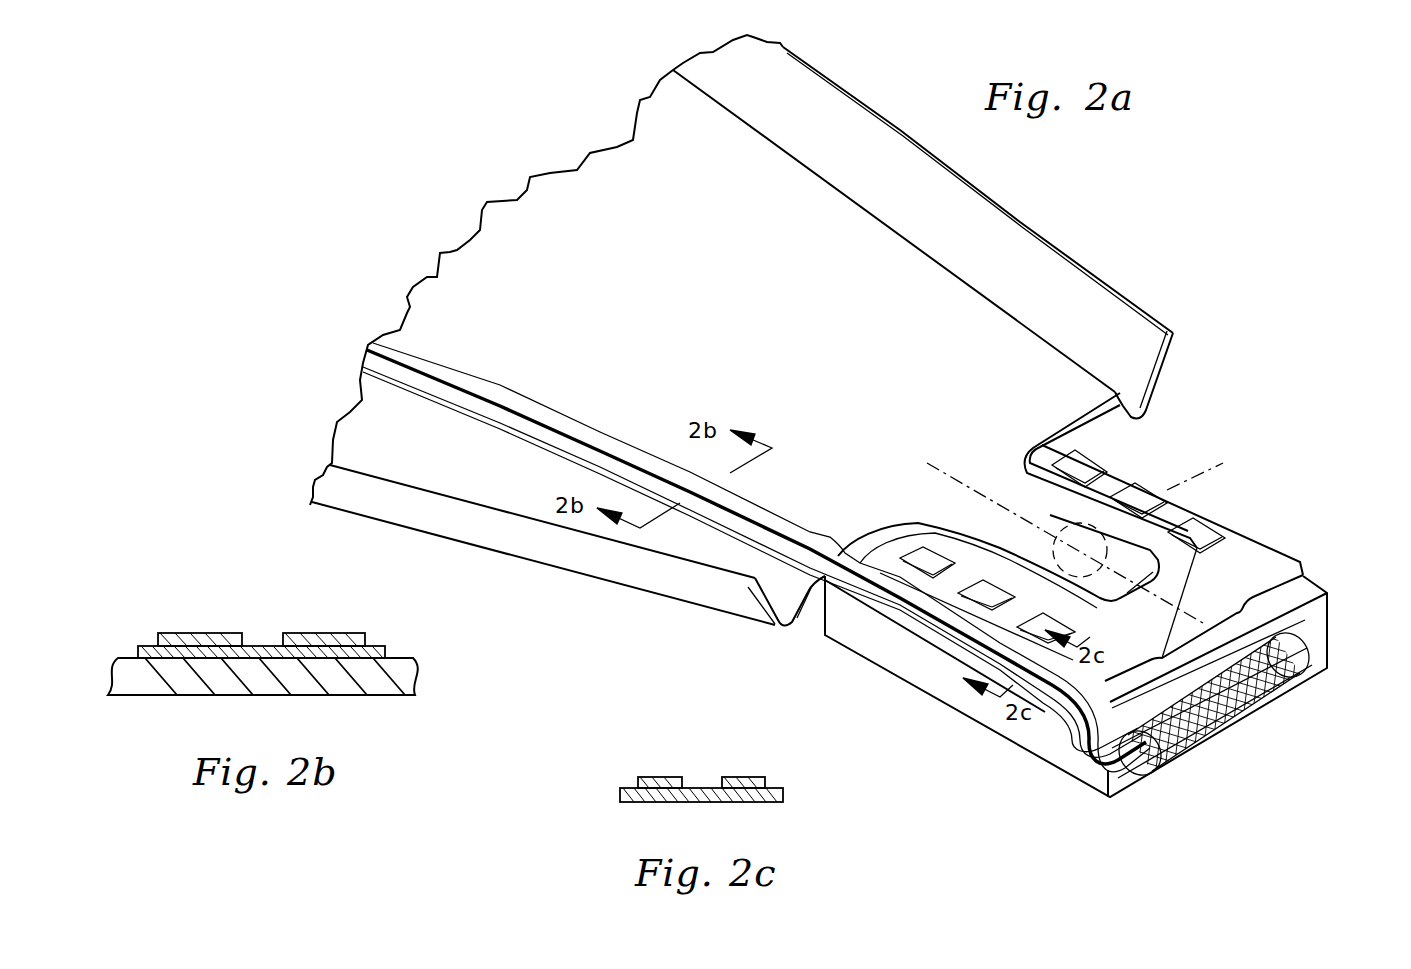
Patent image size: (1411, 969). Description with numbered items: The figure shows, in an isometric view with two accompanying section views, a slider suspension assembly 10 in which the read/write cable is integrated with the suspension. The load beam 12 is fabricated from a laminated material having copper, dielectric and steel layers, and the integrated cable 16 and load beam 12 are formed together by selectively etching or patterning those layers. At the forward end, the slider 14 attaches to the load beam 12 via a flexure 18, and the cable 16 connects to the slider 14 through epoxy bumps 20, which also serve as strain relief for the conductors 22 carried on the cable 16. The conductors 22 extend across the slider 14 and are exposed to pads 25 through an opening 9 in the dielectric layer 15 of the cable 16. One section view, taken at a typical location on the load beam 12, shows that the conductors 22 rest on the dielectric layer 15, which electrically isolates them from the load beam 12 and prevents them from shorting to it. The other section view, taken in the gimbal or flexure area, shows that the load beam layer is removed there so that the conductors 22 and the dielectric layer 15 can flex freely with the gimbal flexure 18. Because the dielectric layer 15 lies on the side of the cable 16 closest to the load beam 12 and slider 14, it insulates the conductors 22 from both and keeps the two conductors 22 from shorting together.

In FIG. 2A, the opening 9 is at (1260, 690).
In FIG. 2A, the slider suspension assembly 10 is at (1142, 255).
In FIG. 2A, the load beam 12 is at (553, 205).
In FIG. 2B, the load beam 12 is at (414, 677).
In FIG. 2A, the slider 14 is at (1327, 630).
In FIG. 2B, the dielectric layer 15 is at (138, 650).
In FIG. 2C, the dielectric layer 15 is at (620, 795).
In FIG. 2A, the integrated cable 16 is at (558, 410).
In FIG. 2A, the flexure 18 is at (1253, 562).
In FIG. 2A, the epoxy bumps 20 is at (1280, 685).
In FIG. 2A, the conductors 22 is at (762, 540).
In FIG. 2B, the conductors 22 is at (187, 633).
In FIG. 2C, the conductors 22 is at (657, 777).
In FIG. 2A, the pads 25 is at (1205, 693).